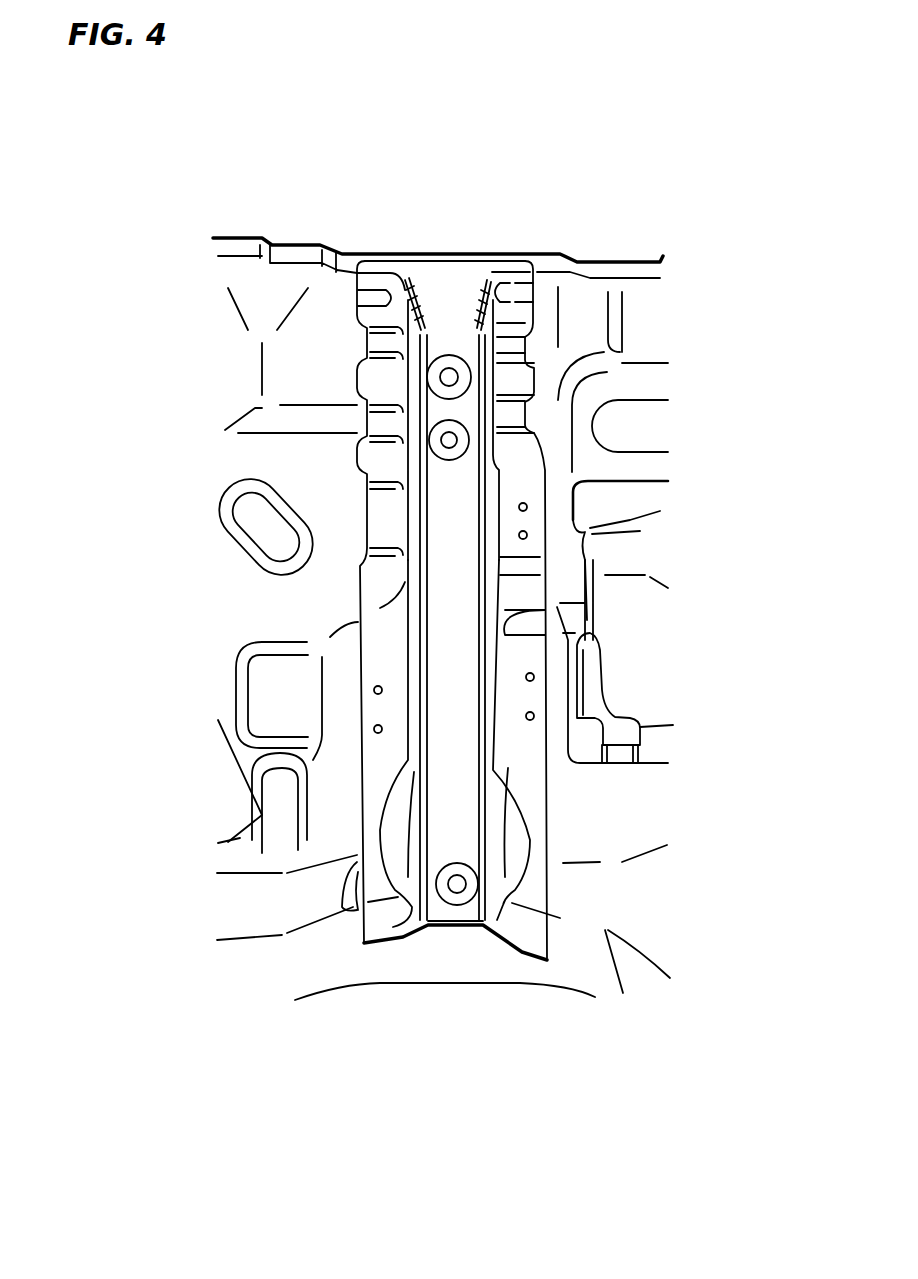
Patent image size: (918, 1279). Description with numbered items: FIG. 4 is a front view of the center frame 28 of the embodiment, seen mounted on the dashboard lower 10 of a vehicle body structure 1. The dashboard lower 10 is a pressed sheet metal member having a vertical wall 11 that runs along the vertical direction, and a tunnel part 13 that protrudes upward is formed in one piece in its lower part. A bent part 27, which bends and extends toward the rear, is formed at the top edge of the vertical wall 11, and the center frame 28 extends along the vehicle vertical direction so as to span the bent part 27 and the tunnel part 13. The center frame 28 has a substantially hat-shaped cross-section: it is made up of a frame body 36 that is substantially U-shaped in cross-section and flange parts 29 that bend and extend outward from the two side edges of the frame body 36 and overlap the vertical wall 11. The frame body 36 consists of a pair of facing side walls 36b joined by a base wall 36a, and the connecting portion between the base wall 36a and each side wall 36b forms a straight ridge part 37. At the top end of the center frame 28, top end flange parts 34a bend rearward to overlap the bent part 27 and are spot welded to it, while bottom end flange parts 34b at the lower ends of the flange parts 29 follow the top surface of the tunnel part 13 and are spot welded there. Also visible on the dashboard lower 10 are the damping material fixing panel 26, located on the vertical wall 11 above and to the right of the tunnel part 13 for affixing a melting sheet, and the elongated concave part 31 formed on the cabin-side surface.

The vehicle body structure 1 is at (628, 200).
The dashboard lower 10 is at (670, 313).
The vertical wall 11 is at (288, 372).
The tunnel part 13 is at (335, 990).
The damping material fixing panel 26 is at (648, 622).
The bent part 27 is at (290, 246).
The center frame 28 is at (448, 287).
The flange parts 29 is at (384, 521).
The concave part 31 is at (577, 888).
The top end flange parts 34a is at (375, 262).
The bottom end flange parts 34b is at (383, 928).
The frame body 36 is at (425, 295).
The base wall 36a is at (460, 812).
The side walls 36b is at (420, 700).
The ridge part 37 is at (478, 312).